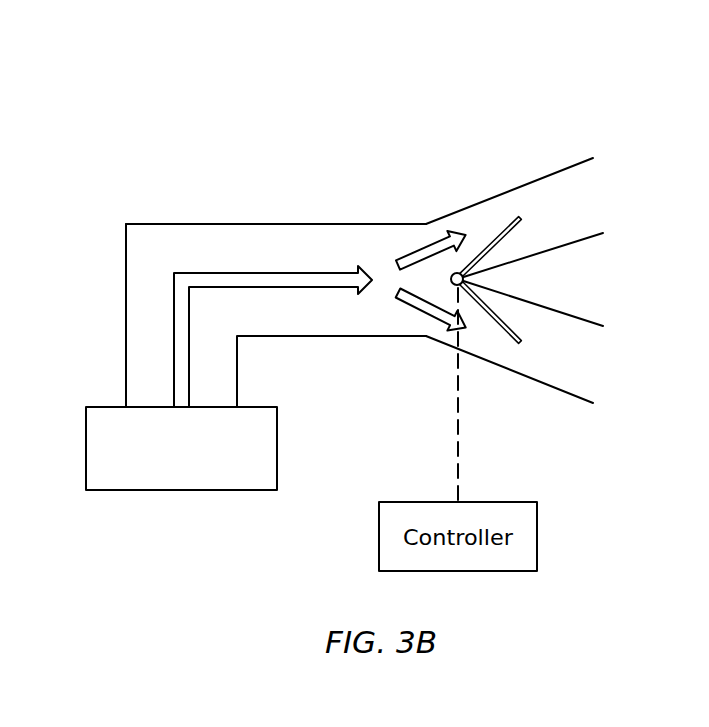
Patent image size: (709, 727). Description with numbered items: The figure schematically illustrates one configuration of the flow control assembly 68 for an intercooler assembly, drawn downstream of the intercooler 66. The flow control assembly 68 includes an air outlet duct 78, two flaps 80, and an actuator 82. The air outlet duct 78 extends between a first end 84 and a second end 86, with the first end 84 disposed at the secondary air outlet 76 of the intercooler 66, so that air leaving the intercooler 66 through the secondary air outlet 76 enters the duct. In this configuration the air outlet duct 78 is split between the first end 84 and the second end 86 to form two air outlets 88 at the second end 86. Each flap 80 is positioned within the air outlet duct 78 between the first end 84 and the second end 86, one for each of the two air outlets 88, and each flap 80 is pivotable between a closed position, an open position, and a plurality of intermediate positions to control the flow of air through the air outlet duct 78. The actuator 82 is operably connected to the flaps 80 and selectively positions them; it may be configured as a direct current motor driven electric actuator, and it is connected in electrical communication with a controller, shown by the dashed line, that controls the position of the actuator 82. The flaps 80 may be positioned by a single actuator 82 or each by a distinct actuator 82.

The intercooler 66 is at (167, 481).
The flow control assembly 68 is at (461, 102).
The secondary air outlet 76 is at (182, 405).
The air outlet duct 78 is at (214, 224).
The flap 80 is at (501, 228).
The actuator 82 is at (451, 283).
The first end 84 is at (125, 405).
The second end 86 is at (637, 224).
The air outlet 88 is at (612, 178).